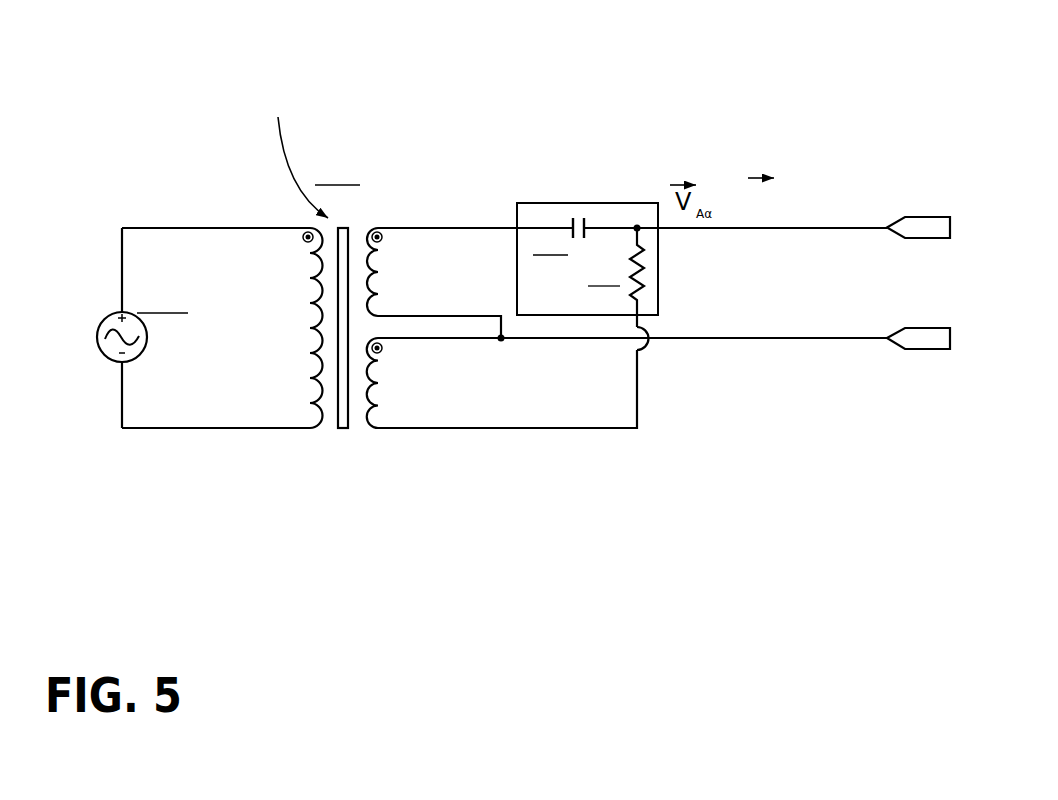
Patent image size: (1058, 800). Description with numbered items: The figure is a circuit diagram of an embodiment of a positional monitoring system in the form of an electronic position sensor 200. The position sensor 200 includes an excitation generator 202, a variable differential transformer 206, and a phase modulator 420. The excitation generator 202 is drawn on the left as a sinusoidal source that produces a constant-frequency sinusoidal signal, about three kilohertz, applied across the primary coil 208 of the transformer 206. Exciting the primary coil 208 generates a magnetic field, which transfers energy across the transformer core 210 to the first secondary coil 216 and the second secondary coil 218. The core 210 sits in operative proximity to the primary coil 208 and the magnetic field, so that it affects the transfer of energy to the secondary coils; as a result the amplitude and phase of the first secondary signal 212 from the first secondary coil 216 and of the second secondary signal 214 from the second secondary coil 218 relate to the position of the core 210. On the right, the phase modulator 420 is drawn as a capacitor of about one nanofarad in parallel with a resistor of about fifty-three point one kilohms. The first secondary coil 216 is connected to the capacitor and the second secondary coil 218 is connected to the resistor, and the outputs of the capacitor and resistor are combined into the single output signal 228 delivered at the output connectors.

The electronic position sensor 200 is at (188, 135).
The excitation generator 202 is at (108, 363).
The VDT 206 is at (353, 282).
The primary coil 208 is at (313, 428).
The VDT core 210 is at (340, 428).
The first secondary signal 212 is at (483, 228).
The second secondary signal 214 is at (420, 340).
The first secondary coil 216 is at (370, 228).
The second secondary coil 218 is at (375, 428).
The single output signal 228 is at (788, 185).
The phase modulator 420 is at (705, 92).